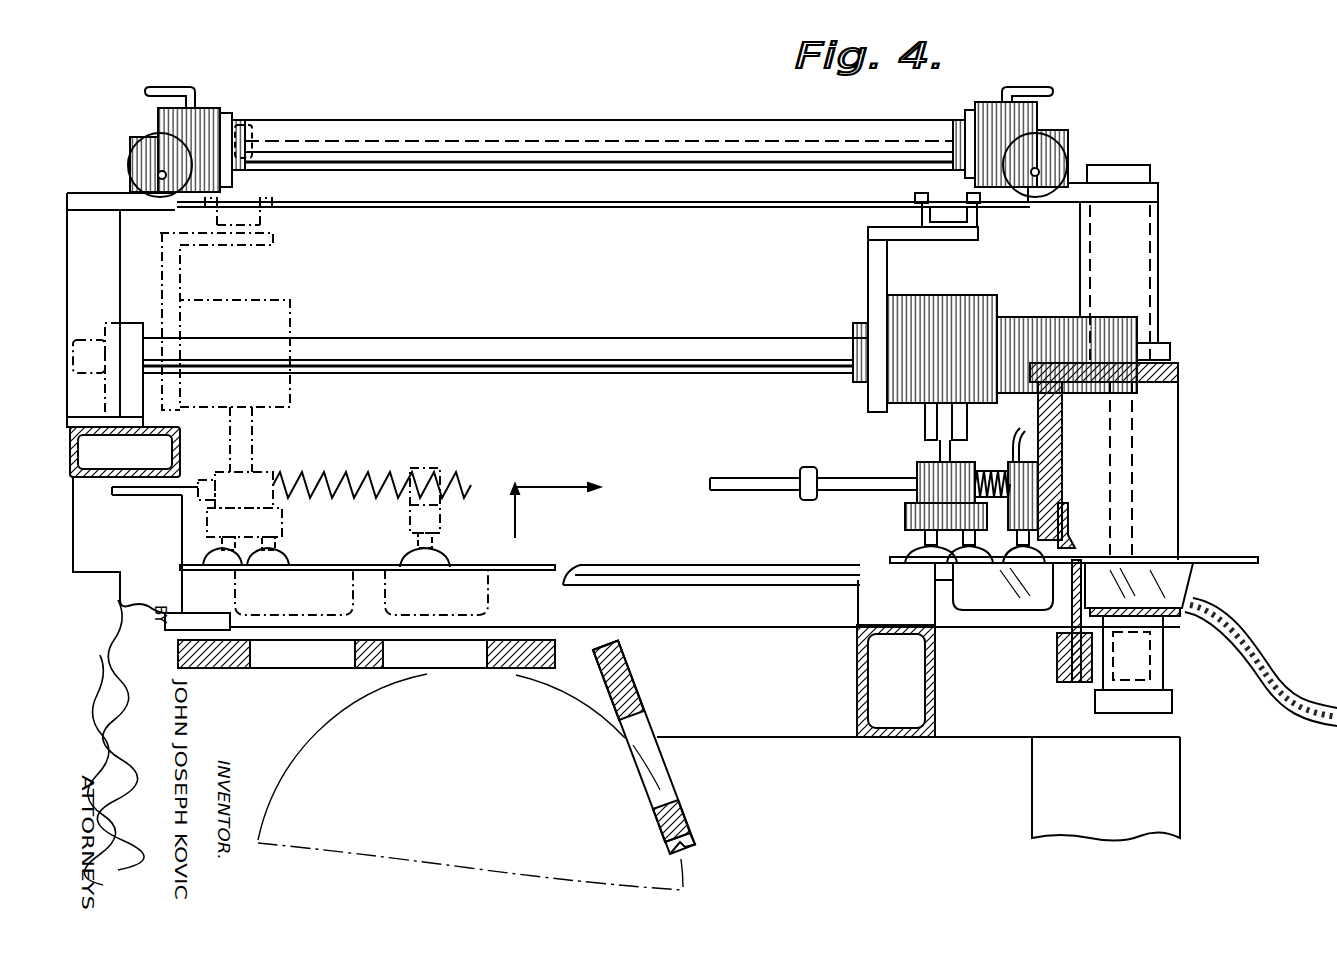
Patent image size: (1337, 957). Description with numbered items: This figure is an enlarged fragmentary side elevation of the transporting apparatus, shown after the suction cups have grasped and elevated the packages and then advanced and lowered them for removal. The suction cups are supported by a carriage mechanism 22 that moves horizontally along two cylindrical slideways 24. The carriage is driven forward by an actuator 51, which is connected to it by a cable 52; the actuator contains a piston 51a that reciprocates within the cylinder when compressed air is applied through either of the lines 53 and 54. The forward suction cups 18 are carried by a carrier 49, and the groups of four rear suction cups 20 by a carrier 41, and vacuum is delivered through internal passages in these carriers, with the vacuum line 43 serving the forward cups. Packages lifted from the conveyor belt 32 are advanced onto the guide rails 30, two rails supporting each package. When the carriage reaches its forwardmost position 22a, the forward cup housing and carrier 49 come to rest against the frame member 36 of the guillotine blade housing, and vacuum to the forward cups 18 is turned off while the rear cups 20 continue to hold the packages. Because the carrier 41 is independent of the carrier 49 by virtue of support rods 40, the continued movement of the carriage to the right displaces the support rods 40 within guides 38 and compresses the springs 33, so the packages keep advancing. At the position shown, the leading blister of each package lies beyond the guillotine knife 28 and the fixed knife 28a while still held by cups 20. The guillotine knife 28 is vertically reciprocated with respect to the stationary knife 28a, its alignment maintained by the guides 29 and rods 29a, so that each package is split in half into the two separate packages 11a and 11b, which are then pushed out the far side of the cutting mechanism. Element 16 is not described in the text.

The compressed air line 54 is at (160, 90).
The compressed air line 53 is at (1045, 80).
The actuator 51 is at (592, 122).
The piston 51a is at (247, 122).
The cable 52 is at (623, 207).
The carriage mechanism 22 is at (300, 309).
The forwardmost position of carriage mechanism 22a is at (992, 300).
The cylindrical slideway 24 is at (661, 337).
The actuator / guide 29 is at (1150, 264).
The operating rod 29a is at (1133, 498).
The frame member 36 is at (1052, 465).
The guide 38 is at (927, 462).
The carrier 41 is at (917, 514).
The spring 33 is at (993, 472).
The carrier 49 is at (1025, 510).
The rear suction cup 20 is at (913, 550).
The forward suction cup 18 is at (1060, 537).
The tray 16 is at (243, 570).
The support rod 40 is at (826, 488).
The vacuum line 43 is at (1014, 436).
The guillotine blade 28 is at (1068, 606).
The fixed blade 28a is at (1065, 548).
The guide rail 30 is at (718, 576).
The separate package 11a is at (933, 583).
The separate package 11b is at (1205, 570).
The conveyor belt 32 is at (556, 655).